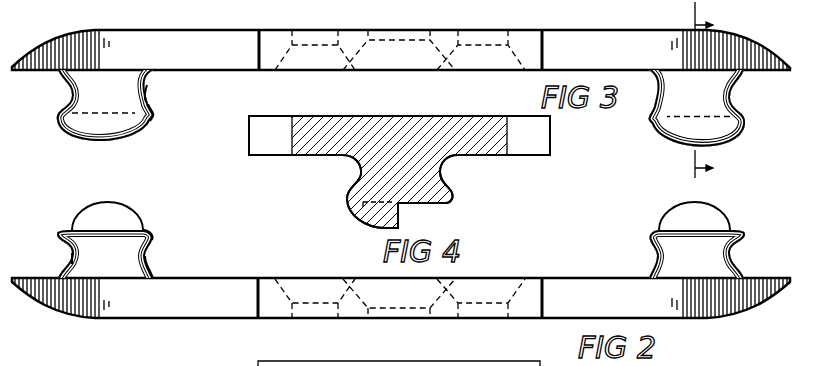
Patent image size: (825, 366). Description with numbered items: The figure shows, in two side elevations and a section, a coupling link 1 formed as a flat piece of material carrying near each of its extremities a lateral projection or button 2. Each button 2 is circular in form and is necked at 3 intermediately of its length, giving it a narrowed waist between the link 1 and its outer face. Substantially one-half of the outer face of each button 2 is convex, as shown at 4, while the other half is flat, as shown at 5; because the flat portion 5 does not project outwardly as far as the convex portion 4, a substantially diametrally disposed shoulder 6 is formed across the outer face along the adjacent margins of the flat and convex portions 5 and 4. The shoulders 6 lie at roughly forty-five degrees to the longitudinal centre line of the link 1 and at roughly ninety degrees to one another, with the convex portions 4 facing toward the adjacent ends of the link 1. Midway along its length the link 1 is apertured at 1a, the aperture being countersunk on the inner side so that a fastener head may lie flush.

In FIG. 3, the link 1 is at (401, 47).
In FIG. 4, the link 1 is at (467, 120).
In FIG. 2, the link 1 is at (401, 300).
In FIG. 2, the aperture 1a is at (350, 284).
In FIG. 3, the button 2 is at (153, 113).
In FIG. 4, the button 2 is at (448, 201).
In FIG. 2, the button 2 is at (77, 253).
In FIG. 3, the neck 3 is at (147, 88).
In FIG. 4, the neck 3 is at (440, 173).
In FIG. 2, the neck 3 is at (150, 251).
In FIG. 3, the convex portion 4 is at (66, 126).
In FIG. 4, the convex portion 4 is at (358, 206).
In FIG. 2, the convex portion 4 is at (76, 217).
In FIG. 3, the flat portion 5 is at (150, 120).
In FIG. 4, the flat portion 5 is at (426, 205).
In FIG. 2, the flat portion 5 is at (144, 229).
In FIG. 4, the shoulder 6 is at (403, 205).
In FIG. 2, the shoulder 6 is at (107, 216).